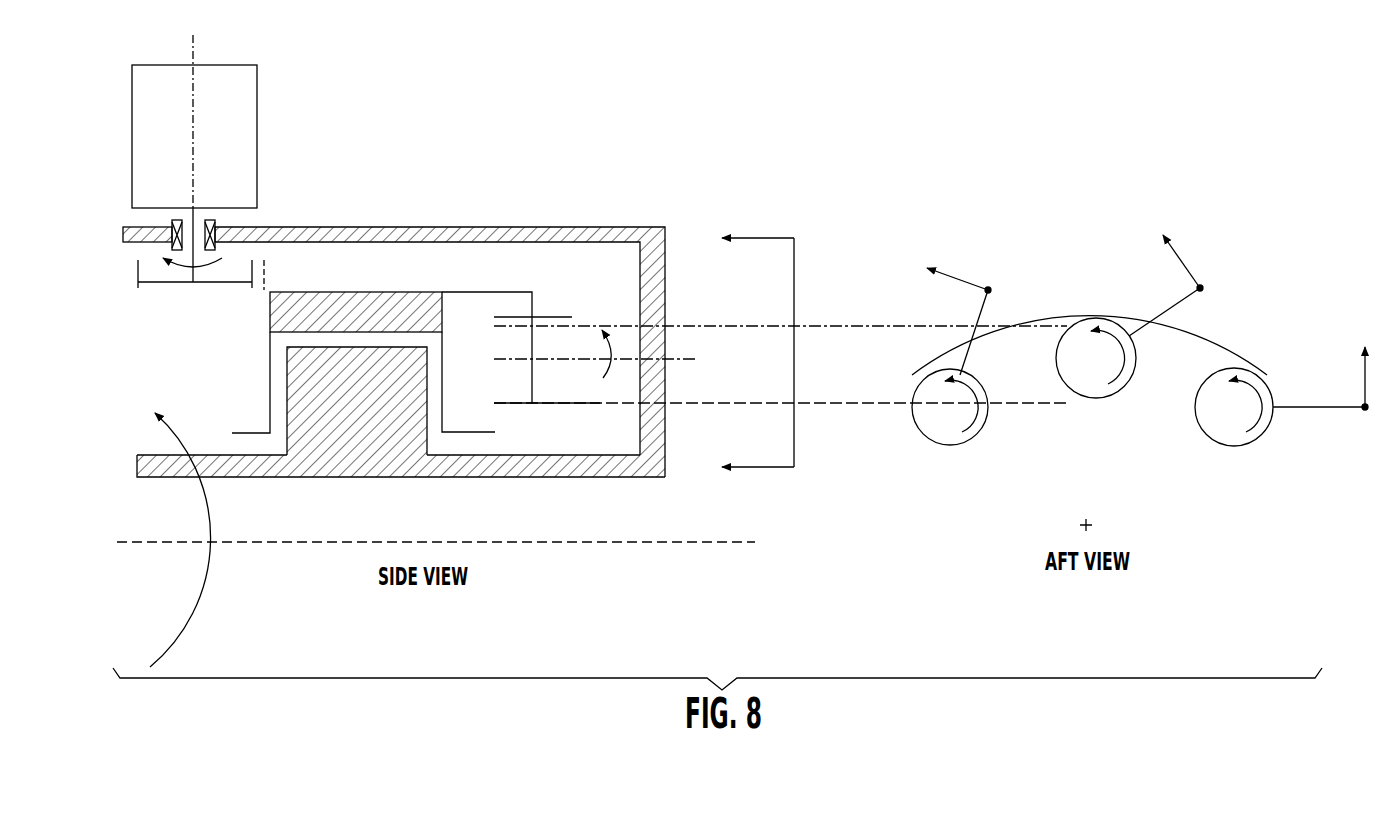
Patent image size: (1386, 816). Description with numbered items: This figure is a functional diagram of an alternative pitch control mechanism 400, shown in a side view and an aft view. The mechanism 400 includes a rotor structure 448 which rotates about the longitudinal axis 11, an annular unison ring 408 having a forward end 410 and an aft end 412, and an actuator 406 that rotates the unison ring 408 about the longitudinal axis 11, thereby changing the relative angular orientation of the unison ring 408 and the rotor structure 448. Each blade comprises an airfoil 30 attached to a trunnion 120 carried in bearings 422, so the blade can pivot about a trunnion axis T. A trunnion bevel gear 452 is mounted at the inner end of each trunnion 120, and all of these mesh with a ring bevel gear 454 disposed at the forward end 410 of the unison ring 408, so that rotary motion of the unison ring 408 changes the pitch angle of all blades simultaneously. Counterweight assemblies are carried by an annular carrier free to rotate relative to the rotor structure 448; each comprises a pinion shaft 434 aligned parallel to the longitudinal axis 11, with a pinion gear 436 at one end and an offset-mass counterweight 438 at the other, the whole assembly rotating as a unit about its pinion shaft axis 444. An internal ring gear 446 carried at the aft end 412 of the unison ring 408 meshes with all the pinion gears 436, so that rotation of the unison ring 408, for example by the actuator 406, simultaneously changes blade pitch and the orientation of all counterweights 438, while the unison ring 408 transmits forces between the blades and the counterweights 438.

The pitch control mechanism 400 is at (600, 110).
The airfoil 30 is at (162, 99).
The trunnion axis T is at (193, 52).
The trunnion 120 is at (193, 218).
The bearings 422 is at (215, 247).
The trunnion bevel gear 452 is at (132, 272).
The ring bevel gear 454 is at (262, 284).
The actuator 406 is at (257, 334).
The rotor structure 448 is at (225, 478).
The unison ring 408 is at (355, 292).
The forward end 410 is at (290, 292).
The aft end 412 is at (495, 292).
The internal ring gear 446 is at (555, 317).
The pinion shaft 434 is at (563, 361).
The pinion shaft axis 444 is at (678, 360).
The pinion gear 436 is at (513, 405).
The counterweight 438 is at (995, 292).
The longitudinal axis 11 is at (635, 542).